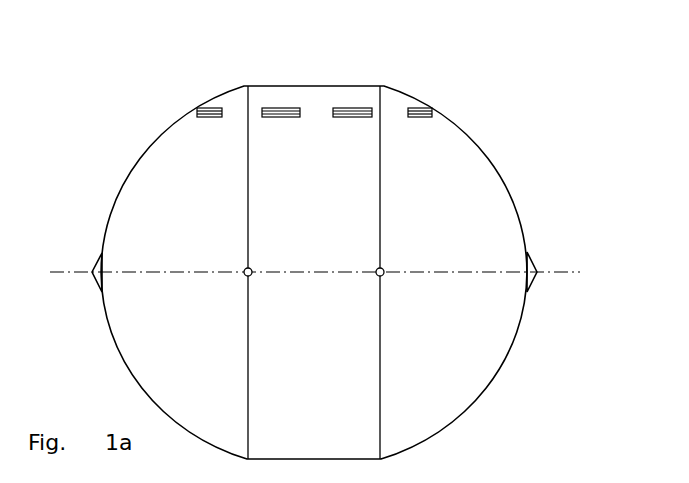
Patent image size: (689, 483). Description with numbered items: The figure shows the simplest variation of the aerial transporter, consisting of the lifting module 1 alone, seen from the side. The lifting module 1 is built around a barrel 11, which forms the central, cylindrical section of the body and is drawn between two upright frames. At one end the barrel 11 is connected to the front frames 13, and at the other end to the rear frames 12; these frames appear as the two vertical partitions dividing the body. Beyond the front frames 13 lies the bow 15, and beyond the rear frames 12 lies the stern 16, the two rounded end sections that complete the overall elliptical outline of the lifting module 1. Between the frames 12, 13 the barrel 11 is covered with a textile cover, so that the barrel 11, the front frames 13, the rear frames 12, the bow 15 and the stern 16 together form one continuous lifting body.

The lifting module 1 is at (515, 203).
The barrel 11 is at (315, 162).
The rear frame 12 is at (380, 138).
The front frame 13 is at (248, 133).
The bow 15 is at (195, 197).
The stern 16 is at (438, 195).